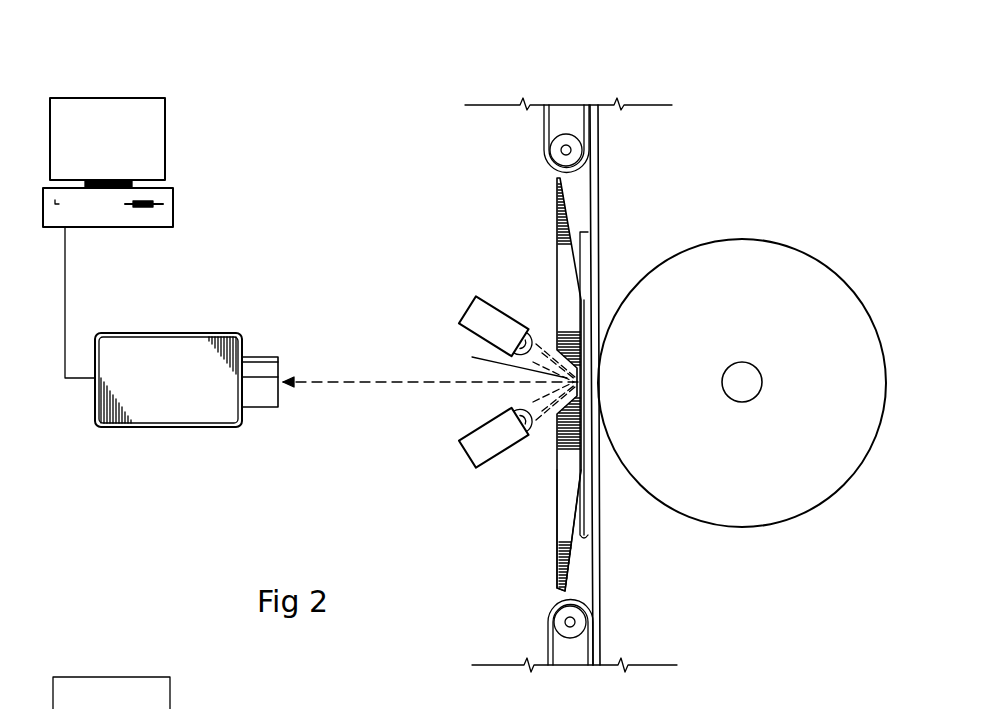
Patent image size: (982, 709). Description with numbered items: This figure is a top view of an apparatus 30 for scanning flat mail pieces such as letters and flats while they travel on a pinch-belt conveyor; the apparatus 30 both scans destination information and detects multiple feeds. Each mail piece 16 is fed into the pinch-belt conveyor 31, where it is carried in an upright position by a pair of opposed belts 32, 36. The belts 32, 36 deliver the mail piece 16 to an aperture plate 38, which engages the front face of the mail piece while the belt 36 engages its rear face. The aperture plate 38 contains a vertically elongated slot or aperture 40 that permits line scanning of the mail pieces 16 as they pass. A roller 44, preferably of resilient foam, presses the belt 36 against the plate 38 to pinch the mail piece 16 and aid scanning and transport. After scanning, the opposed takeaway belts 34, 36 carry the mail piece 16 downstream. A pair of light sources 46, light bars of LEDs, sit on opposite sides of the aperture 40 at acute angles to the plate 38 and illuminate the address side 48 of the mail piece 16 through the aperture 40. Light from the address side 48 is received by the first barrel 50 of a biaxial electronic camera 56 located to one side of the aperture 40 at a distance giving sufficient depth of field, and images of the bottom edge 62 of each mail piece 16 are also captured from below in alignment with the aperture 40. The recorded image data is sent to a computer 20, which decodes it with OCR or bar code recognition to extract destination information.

The mail piece 16 is at (588, 518).
The computer 20 is at (108, 220).
The apparatus 30 is at (492, 233).
The pinch-belt conveyor 31 is at (600, 139).
The belt 32 is at (548, 636).
The takeaway belt 34 is at (543, 122).
The belt 36 is at (599, 160).
The aperture plate 38 is at (560, 502).
The aperture 40 is at (498, 357).
The roller 44 is at (770, 255).
The light source 46 is at (489, 304).
The address side 48 is at (573, 252).
The first barrel 50 is at (262, 390).
The biaxial electronic camera 56 is at (188, 432).
The bottom edge 62 is at (587, 548).